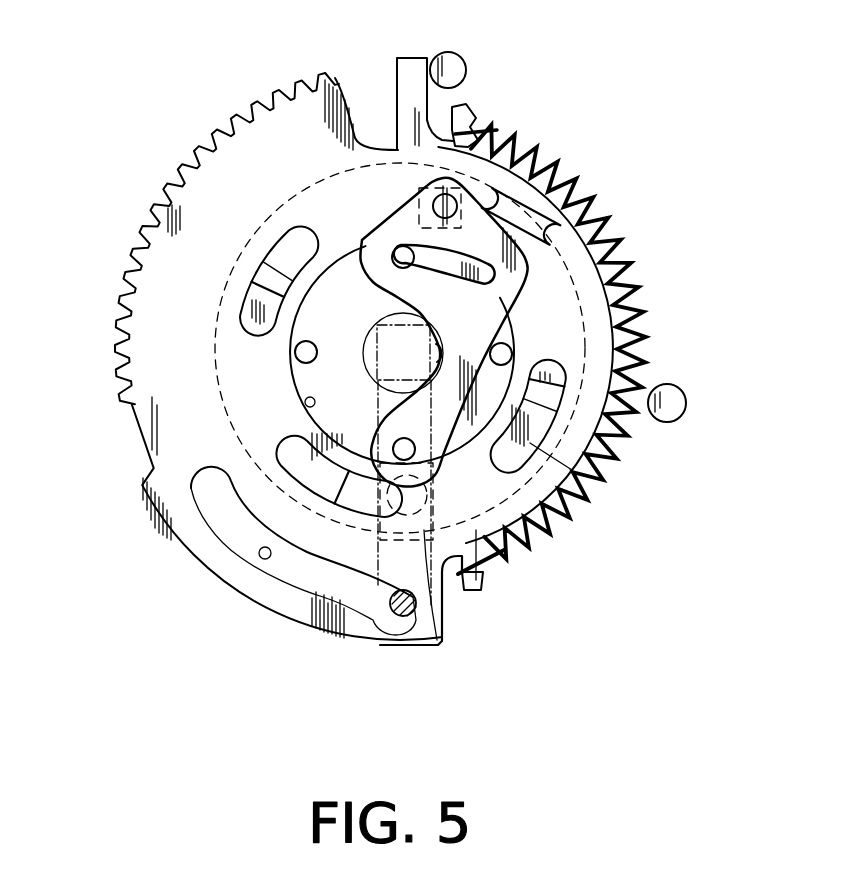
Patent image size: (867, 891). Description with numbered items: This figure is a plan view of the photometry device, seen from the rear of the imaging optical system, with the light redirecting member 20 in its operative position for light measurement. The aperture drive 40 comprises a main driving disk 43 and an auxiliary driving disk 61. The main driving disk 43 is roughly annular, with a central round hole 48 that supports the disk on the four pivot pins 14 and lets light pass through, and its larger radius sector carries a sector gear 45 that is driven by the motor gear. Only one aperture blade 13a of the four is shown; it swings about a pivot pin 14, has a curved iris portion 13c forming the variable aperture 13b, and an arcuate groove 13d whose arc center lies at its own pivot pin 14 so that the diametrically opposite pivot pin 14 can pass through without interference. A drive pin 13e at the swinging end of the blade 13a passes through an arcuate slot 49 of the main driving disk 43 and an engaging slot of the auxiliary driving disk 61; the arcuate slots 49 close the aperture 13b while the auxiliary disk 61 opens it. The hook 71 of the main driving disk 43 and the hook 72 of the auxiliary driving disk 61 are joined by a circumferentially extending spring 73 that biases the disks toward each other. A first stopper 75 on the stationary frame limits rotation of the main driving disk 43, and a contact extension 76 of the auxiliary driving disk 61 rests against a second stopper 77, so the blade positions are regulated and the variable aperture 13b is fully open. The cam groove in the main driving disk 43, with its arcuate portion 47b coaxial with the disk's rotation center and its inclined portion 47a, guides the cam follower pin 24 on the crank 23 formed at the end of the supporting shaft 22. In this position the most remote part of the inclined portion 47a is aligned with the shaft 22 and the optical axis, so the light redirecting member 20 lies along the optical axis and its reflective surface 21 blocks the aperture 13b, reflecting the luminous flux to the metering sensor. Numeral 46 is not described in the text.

The aperture blade 13a is at (533, 172).
The variable aperture 13b is at (367, 372).
The curved iris portion 13c is at (477, 337).
The arcuate groove 13d is at (378, 310).
The drive pin 13e is at (421, 191).
The pivot pin 14 is at (372, 231).
The light redirecting member 20 is at (357, 370).
The reflective surface 21 is at (362, 350).
The supporting shaft 22 is at (442, 492).
The crank 23 is at (376, 557).
The cam follower pin 24 is at (440, 645).
The aperture drive 40 is at (190, 85).
The main driving disk 43 is at (138, 436).
The sector gear 45 is at (137, 232).
The curved slot 46 is at (205, 570).
The inclined portion 47a is at (378, 605).
The arcuate portion 47b is at (266, 560).
The round hole 48 is at (303, 408).
The arcuate slot 49 is at (590, 203).
The auxiliary driving disk 61 is at (217, 356).
The hook 71 is at (482, 582).
The hook 72 is at (474, 116).
The spring 73 is at (638, 306).
The first stopper 75 is at (673, 397).
The contact extension 76 is at (405, 58).
The second stopper 77 is at (490, 50).